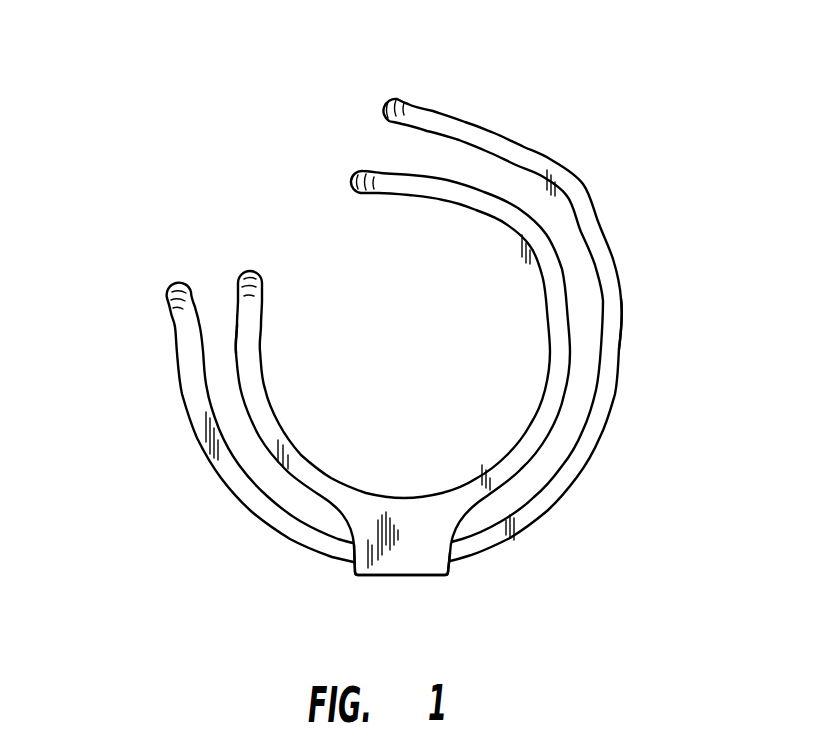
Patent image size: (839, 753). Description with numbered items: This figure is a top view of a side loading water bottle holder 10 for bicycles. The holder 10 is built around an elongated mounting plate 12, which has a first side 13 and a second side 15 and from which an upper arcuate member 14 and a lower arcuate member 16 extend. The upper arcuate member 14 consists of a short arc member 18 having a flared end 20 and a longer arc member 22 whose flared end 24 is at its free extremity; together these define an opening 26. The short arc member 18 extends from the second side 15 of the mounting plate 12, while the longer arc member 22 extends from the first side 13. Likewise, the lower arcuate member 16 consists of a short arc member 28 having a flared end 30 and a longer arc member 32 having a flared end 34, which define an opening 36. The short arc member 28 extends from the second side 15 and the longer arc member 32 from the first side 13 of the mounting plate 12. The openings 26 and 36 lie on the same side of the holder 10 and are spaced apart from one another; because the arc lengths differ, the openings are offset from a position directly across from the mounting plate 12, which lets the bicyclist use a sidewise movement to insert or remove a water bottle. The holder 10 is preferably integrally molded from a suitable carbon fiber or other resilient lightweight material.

The water bottle holder 10 is at (461, 335).
The mounting plate 12 is at (410, 577).
The first side 13 is at (450, 540).
The upper arcuate member 14 is at (265, 389).
The second side 15 is at (353, 545).
The lower arcuate member 16 is at (556, 166).
The short arc member 18 is at (248, 337).
The flared end 20 is at (243, 275).
The longer arc member 22 is at (523, 258).
The free end of second leg 24 is at (352, 173).
The opening 26 is at (298, 238).
The short arc member 28 is at (200, 435).
The flared end 30 is at (168, 290).
The longer arc member 32 is at (618, 360).
The flared end 34 is at (386, 96).
The opening 36 is at (378, 138).